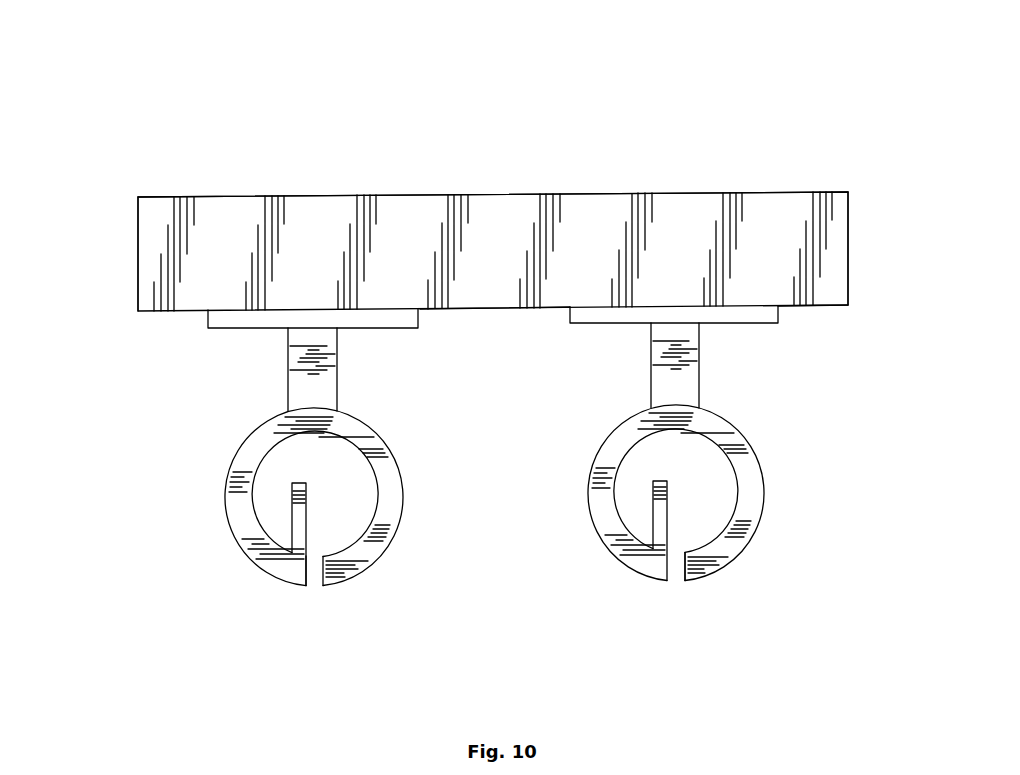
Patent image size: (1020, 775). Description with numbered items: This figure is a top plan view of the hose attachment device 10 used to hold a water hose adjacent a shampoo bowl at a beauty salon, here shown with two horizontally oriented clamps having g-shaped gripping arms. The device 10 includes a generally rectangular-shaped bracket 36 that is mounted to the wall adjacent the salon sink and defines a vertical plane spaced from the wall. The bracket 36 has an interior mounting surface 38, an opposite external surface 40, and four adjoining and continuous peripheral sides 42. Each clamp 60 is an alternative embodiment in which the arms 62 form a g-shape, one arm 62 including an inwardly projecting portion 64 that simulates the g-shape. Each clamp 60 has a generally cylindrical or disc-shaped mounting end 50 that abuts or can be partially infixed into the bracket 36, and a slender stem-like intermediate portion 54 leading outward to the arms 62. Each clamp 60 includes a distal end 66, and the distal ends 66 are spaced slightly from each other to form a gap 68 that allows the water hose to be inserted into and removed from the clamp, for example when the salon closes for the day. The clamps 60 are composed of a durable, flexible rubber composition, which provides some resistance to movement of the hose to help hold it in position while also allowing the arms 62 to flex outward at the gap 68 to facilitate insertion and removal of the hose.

The hose attachment device 10 is at (493, 114).
The bracket 36 is at (138, 197).
The interior mounting surface 38 is at (243, 197).
The external surface 40 is at (833, 307).
The peripheral sides 42 is at (138, 295).
The mounting end 50 is at (400, 328).
The intermediate portion 54 is at (288, 378).
The clamp 60 is at (495, 540).
The arms 62 is at (243, 552).
The inwardly projecting portion 64 is at (290, 483).
The distal end 66 is at (323, 583).
The gap 68 is at (312, 578).